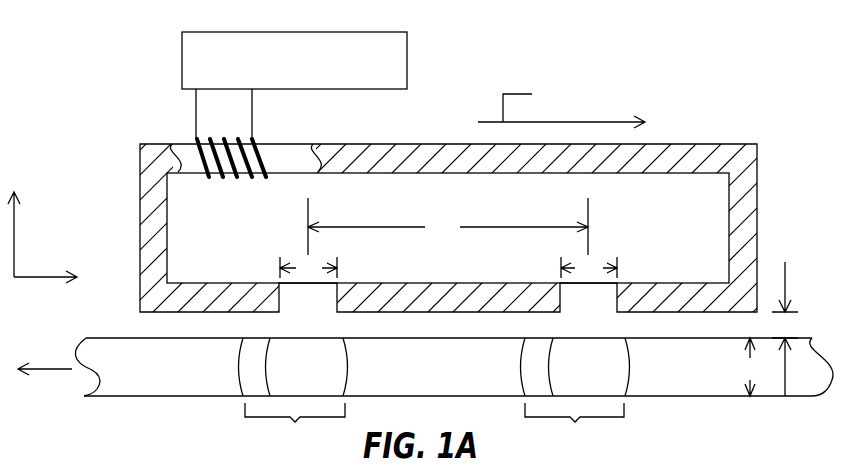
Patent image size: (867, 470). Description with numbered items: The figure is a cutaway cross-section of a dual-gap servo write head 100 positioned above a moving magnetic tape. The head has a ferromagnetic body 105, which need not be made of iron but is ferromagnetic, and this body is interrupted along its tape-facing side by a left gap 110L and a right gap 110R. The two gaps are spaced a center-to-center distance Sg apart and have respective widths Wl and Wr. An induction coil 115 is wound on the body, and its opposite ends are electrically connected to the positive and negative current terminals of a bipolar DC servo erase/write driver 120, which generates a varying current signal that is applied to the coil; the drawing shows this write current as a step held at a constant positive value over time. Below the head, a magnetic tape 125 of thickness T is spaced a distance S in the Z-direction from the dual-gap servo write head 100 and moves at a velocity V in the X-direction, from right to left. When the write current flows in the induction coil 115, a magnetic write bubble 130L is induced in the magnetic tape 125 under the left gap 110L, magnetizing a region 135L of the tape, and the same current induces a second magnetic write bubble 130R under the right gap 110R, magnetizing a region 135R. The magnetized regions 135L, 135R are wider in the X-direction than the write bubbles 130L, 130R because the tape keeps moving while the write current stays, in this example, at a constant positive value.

The dual-gap servo write head 100 is at (91, 124).
The ferromagnetic body 105 is at (750, 192).
The left gap 110L is at (331, 313).
The right gap 110R is at (613, 313).
The induction coil 115 is at (262, 158).
The bipolar DC servo erase/write driver 120 is at (182, 70).
The magnetic tape 125 is at (731, 386).
The magnetic write bubble 130L is at (333, 386).
The magnetic write bubble 130R is at (613, 386).
The magnetized region 135L is at (295, 426).
The magnetized region 135R is at (574, 426).